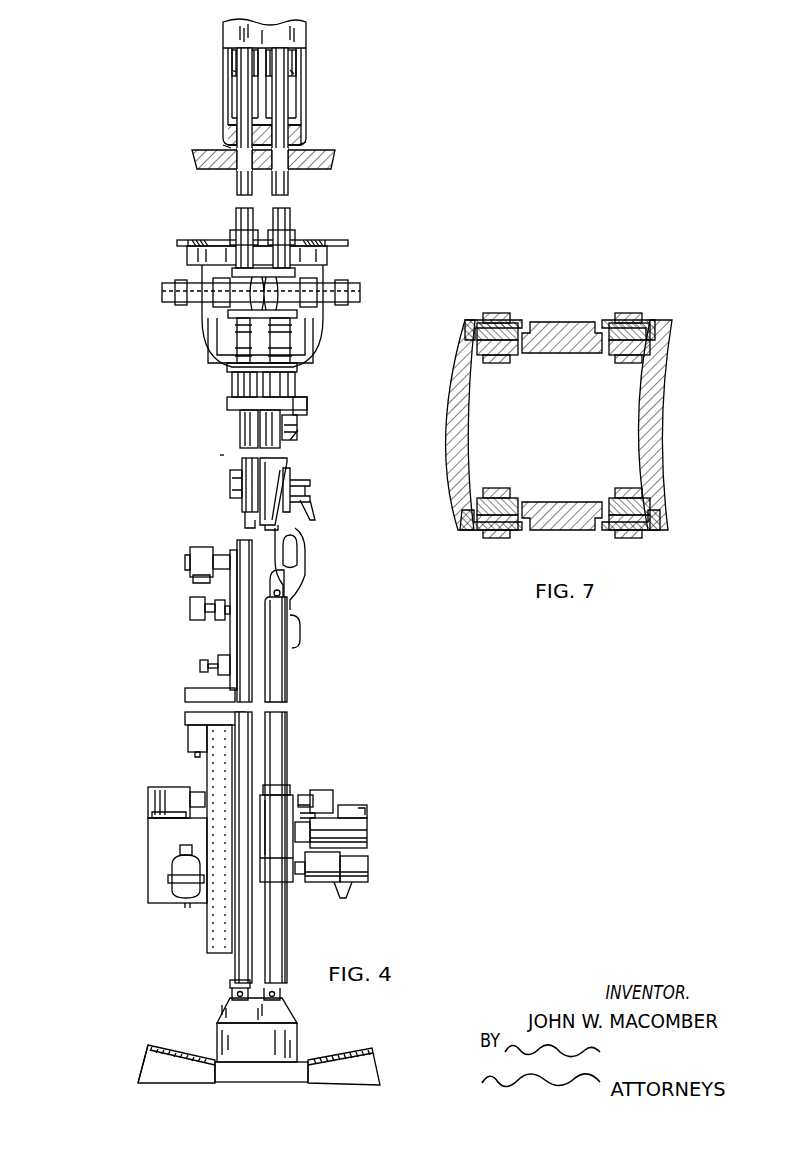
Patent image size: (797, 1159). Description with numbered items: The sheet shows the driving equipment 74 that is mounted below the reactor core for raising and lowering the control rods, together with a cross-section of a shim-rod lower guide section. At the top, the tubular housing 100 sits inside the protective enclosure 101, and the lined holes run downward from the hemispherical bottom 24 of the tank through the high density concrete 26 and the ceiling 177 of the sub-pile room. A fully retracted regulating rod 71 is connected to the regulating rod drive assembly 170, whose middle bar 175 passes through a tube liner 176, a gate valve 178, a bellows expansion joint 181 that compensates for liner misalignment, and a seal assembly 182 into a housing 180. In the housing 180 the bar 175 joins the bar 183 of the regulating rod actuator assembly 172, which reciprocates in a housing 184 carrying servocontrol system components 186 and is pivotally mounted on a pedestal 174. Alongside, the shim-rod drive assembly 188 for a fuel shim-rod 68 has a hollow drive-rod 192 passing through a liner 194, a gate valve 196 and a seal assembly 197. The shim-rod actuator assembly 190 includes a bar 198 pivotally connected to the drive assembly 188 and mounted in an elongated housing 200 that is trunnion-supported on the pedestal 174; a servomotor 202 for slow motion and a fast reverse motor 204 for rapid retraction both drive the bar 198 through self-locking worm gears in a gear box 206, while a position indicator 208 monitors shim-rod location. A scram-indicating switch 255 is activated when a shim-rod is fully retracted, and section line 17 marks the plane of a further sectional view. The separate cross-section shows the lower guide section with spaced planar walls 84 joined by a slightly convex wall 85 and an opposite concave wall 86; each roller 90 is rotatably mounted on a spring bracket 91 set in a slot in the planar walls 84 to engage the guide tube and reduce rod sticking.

In FIG. 4, the protective enclosure 101 is at (226, 42).
In FIG. 4, the tubular housing 100 is at (232, 63).
In FIG. 4, the regulating rod 71 is at (234, 72).
In FIG. 4, the fuel shim-rod 68 is at (294, 72).
In FIG. 4, the bar 175 is at (226, 147).
In FIG. 4, the hollow drive-rod 192 is at (292, 146).
In FIG. 4, the bottom 24 is at (335, 160).
In FIG. 4, the tube liner 176 is at (237, 186).
In FIG. 4, the liner 194 is at (290, 186).
In FIG. 4, the ceiling 177 is at (190, 242).
In FIG. 4, the scram-indicating switch 255 is at (192, 252).
In FIG. 4, the gate valve 196 is at (325, 292).
In FIG. 4, the gate valve 178 is at (222, 305).
In FIG. 4, the bellows expansion joint 181 is at (240, 340).
In FIG. 4, the seal assembly 197 is at (302, 380).
In FIG. 4, the seal assembly 182 is at (232, 382).
In FIG. 4, the housing 180 is at (242, 436).
In FIG. 4, the shim-rod drive assembly 188 is at (305, 437).
In FIG. 4, the regulating rod drive assembly 170 is at (205, 452).
In FIG. 4, the bar 183 is at (242, 525).
In FIG. 4, the section line 17 is at (282, 492).
In FIG. 4, the bar 198 is at (305, 596).
In FIG. 4, the regulating rod actuator assembly 172 is at (182, 632).
In FIG. 4, the shim-rod actuator assembly 190 is at (300, 656).
In FIG. 4, the driving equipment 74 is at (322, 766).
In FIG. 4, the housing 184 is at (210, 760).
In FIG. 4, the elongated housing 200 is at (290, 736).
In FIG. 4, the gear box 206 is at (290, 884).
In FIG. 4, the position indicator 208 is at (320, 792).
In FIG. 4, the fast reverse motor 204 is at (367, 826).
In FIG. 4, the servomotor 202 is at (368, 863).
In FIG. 4, the servocontrol system components 186 is at (142, 862).
In FIG. 4, the pedestal 174 is at (225, 1012).
In FIG. 4, the concrete 26 is at (148, 1073).
In FIG. 7, the convex wall 85 is at (450, 445).
In FIG. 7, the concave wall 86 is at (663, 410).
In FIG. 7, the planar walls 84 is at (552, 322).
In FIG. 7, the spring bracket 91 is at (465, 332).
In FIG. 7, the roller 90 is at (495, 313).